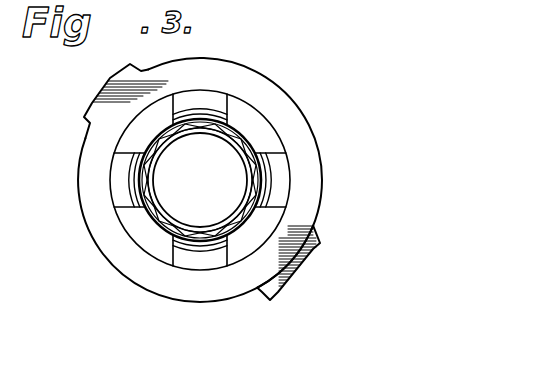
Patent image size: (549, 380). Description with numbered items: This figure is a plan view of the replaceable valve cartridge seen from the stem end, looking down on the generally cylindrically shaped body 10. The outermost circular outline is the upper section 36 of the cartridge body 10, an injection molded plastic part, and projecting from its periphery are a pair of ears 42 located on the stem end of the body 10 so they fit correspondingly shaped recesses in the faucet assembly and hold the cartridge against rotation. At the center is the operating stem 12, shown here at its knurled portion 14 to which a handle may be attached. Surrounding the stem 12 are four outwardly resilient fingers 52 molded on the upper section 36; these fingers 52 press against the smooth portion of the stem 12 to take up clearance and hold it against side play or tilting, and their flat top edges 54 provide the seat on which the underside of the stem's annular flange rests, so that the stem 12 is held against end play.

The body 10 is at (93, 259).
The operating stem 12 is at (200, 180).
The knurled portion 14 is at (300, 113).
The upper section 36 is at (88, 200).
The ears 42 is at (83, 117).
The outwardly resilient fingers 52 is at (219, 97).
The flat top edges 54 is at (198, 108).